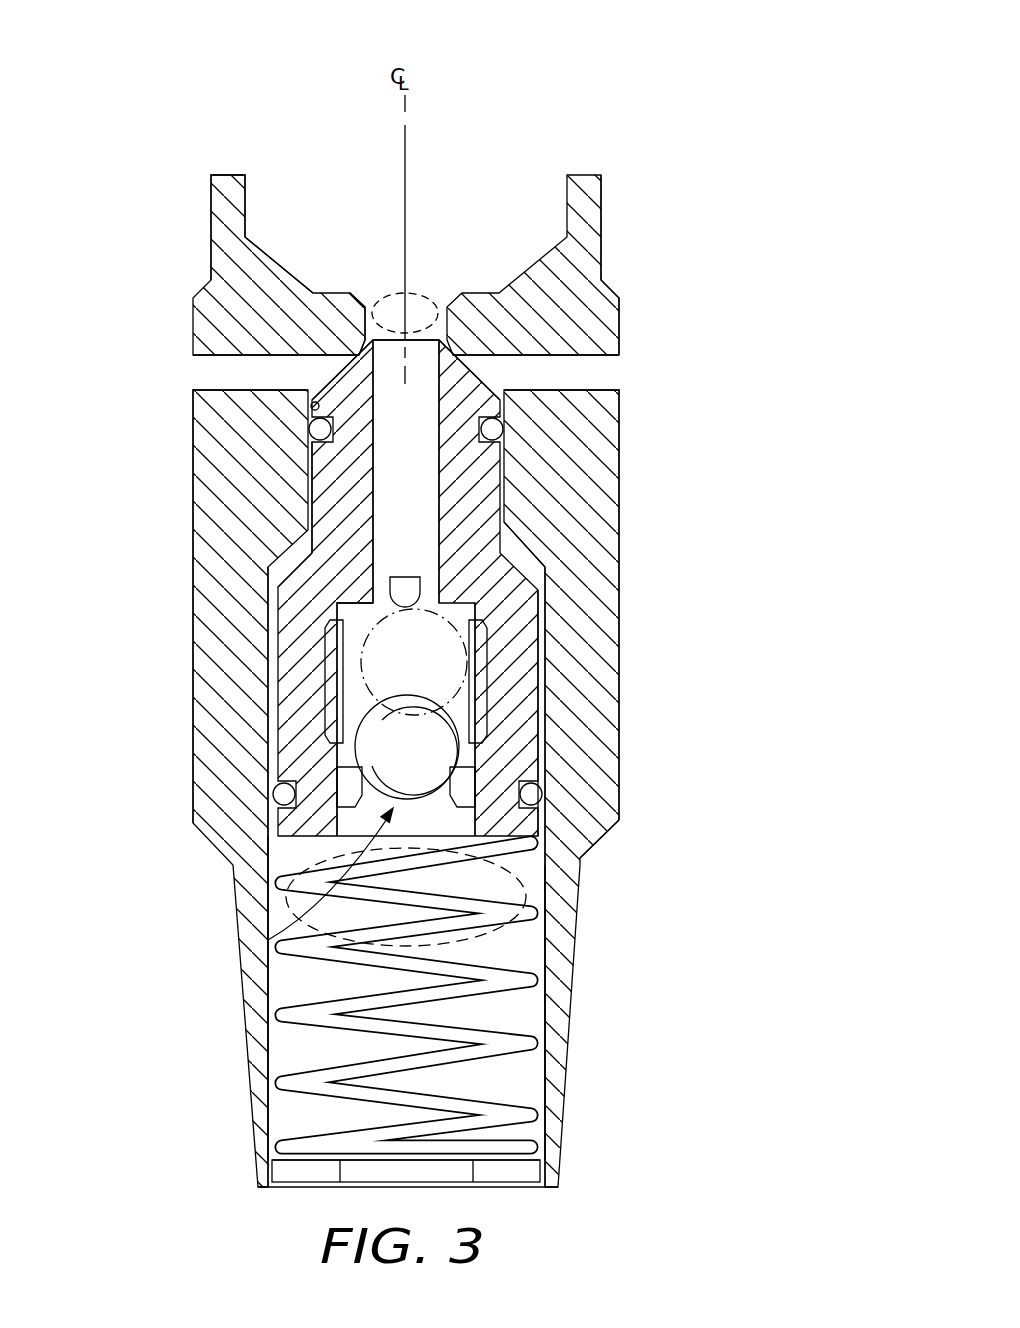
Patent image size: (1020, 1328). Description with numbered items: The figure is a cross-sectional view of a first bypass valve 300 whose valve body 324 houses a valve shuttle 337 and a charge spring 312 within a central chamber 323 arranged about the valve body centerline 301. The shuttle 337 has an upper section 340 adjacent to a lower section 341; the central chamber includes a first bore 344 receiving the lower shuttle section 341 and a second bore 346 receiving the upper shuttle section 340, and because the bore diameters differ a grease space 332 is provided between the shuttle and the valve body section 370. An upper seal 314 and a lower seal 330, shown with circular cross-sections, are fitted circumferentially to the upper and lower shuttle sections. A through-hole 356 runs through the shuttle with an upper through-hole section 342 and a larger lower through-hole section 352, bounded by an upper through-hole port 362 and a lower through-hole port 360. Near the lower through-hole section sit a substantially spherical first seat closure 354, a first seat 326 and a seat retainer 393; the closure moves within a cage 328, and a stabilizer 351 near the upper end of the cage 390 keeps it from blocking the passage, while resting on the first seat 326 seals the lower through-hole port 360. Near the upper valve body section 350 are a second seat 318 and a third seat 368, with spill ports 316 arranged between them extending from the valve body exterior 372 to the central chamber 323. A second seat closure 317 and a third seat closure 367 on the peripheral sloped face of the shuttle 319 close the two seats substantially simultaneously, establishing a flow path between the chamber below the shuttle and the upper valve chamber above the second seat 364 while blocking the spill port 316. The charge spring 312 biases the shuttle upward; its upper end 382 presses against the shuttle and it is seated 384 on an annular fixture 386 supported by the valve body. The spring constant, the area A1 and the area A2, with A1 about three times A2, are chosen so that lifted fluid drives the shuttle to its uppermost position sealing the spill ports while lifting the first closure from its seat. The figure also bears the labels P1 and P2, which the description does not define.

The first bypass valve 300 is at (134, 196).
The valve body centerline 301 is at (406, 152).
The charge spring 312 is at (302, 1003).
The upper seal 314 is at (309, 429).
The spill port 316 is at (218, 370).
The second seat closure 317 is at (452, 350).
The second seat 318 is at (387, 333).
The peripheral sloped face of the shuttle 319 is at (323, 373).
The central chamber 323 is at (514, 1011).
The valve body 324 is at (638, 321).
The first seat 326 is at (465, 795).
The cage 328 is at (335, 615).
The lower seal 330 is at (276, 802).
The grease space 332 is at (284, 567).
The valve shuttle 337 is at (514, 546).
The upper shuttle section 340 is at (472, 502).
The lower shuttle section 341 is at (523, 695).
The upper through-hole section 342 is at (430, 483).
The first bore 344 is at (550, 660).
The second bore 346 is at (310, 484).
The upper valve body section 350 is at (583, 260).
The stabilizer 351 is at (327, 632).
The lower through-hole section 352 is at (326, 697).
The first seat closure 354 is at (352, 765).
The through-hole 356 is at (280, 930).
The lower through-hole port 360 is at (530, 888).
The upper through-hole port 362 is at (300, 1052).
The upper valve chamber 364 is at (322, 200).
The third seat closure 367 is at (508, 392).
The third seat 368 is at (311, 407).
The valve body section 370 is at (578, 630).
The valve body exterior 372 is at (192, 333).
The upper end of the spring 382 is at (582, 852).
The spring seat 384 is at (535, 1152).
The annular fixture 386 is at (278, 1165).
The upper end of the cage 390 is at (458, 618).
The seat retainer 393 is at (545, 805).
The area A1 is at (273, 876).
The area A2 is at (425, 297).
The first pressure P1 is at (548, 935).
The second pressure P2 is at (275, 205).